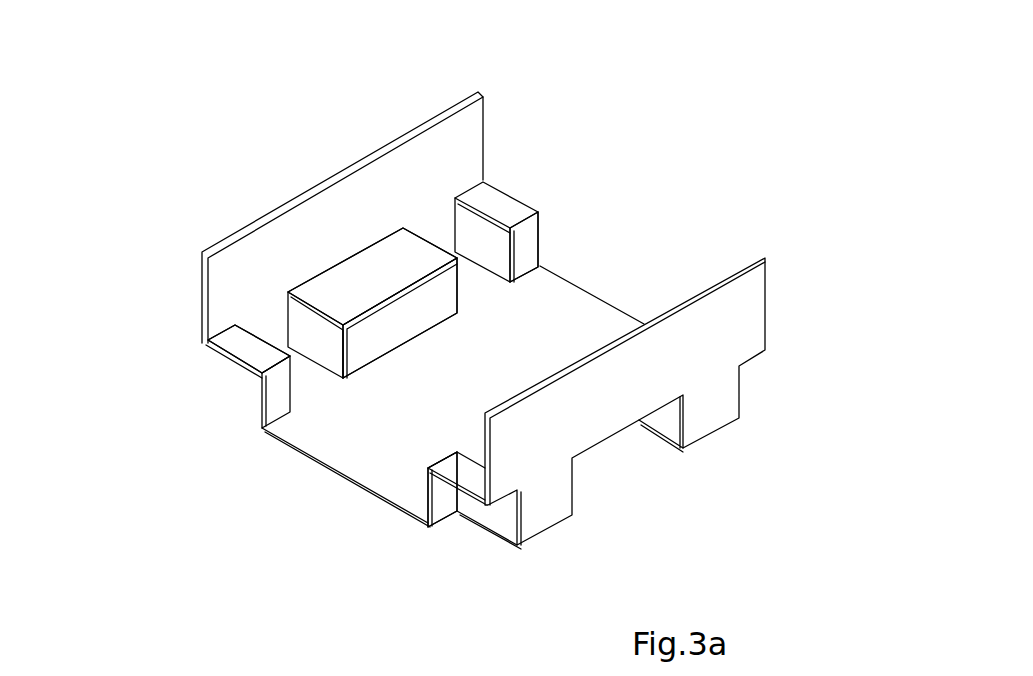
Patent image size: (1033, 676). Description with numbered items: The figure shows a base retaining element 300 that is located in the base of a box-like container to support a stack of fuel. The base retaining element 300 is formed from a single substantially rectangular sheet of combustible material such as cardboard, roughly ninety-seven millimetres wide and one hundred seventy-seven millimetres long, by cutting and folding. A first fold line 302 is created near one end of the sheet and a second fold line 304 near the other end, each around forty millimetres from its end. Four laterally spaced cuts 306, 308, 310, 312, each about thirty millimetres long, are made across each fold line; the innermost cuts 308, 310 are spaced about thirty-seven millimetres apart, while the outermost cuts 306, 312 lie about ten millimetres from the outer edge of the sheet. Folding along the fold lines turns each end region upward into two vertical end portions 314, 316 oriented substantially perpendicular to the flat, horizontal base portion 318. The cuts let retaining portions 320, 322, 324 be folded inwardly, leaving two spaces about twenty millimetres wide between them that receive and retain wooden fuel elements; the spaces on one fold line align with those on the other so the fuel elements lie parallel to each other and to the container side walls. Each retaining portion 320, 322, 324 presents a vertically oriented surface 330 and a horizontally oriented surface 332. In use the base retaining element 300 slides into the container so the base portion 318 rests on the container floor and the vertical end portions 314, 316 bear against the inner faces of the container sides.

The base retaining element 300 is at (683, 492).
The first fold line 302 is at (262, 376).
The second fold line 304 is at (428, 476).
The cut 306 is at (260, 338).
The cut 308 is at (321, 313).
The cut 310 is at (430, 242).
The cut 312 is at (495, 215).
The vertical end portion 314 is at (205, 278).
The vertical end portion 316 is at (750, 290).
The base portion 318 is at (575, 307).
The retaining portion 320 is at (253, 356).
The retaining portion 322 is at (402, 327).
The retaining portion 324 is at (538, 207).
The vertically oriented surface 330 is at (428, 470).
The horizontally oriented surface 332 is at (472, 475).